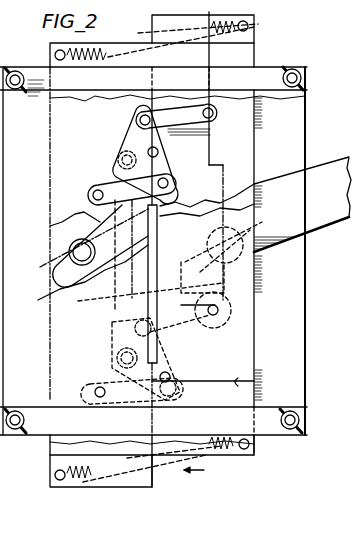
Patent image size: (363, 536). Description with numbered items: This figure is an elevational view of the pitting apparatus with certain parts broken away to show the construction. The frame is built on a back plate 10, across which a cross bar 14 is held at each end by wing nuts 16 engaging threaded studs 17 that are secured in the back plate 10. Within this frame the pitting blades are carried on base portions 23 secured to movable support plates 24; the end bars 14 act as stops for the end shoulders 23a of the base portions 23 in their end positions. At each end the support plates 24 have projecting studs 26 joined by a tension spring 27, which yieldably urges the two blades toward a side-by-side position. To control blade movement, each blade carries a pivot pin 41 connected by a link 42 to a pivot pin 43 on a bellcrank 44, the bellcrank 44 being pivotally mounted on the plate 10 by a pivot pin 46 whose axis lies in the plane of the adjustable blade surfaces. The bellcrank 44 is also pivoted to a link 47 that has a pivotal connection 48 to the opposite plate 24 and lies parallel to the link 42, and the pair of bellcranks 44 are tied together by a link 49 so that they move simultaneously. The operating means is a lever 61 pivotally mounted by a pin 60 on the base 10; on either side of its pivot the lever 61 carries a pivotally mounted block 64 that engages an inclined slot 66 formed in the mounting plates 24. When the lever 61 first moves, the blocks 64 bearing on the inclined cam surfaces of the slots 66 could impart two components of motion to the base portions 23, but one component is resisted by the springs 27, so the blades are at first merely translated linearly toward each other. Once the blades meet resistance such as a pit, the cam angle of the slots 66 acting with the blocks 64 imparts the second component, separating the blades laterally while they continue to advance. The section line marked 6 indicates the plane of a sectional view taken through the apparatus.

The section line 6- 6 is at (180, 251).
The back plate 10 is at (300, 316).
The cross bar 14 is at (264, 73).
The wing nut 16 is at (306, 84).
The threaded stud 17 is at (298, 71).
The base portion 23 is at (144, 223).
The end shoulder 23a is at (244, 383).
The support plate 24 is at (133, 496).
The projecting stud 26 is at (55, 55).
The tension spring 27 is at (238, 466).
The pivot pin 41 is at (213, 119).
The link 42 is at (162, 150).
The pivot pin 43 is at (140, 120).
The bellcrank 44 is at (118, 140).
The pivot pin 46 is at (170, 179).
The link 47 is at (104, 179).
The pivotal connection 48 is at (93, 195).
The link 49 is at (113, 310).
The pin 60 is at (170, 249).
The lever 61 is at (333, 218).
The block 64 is at (265, 227).
The inclined slot 66 is at (57, 263).